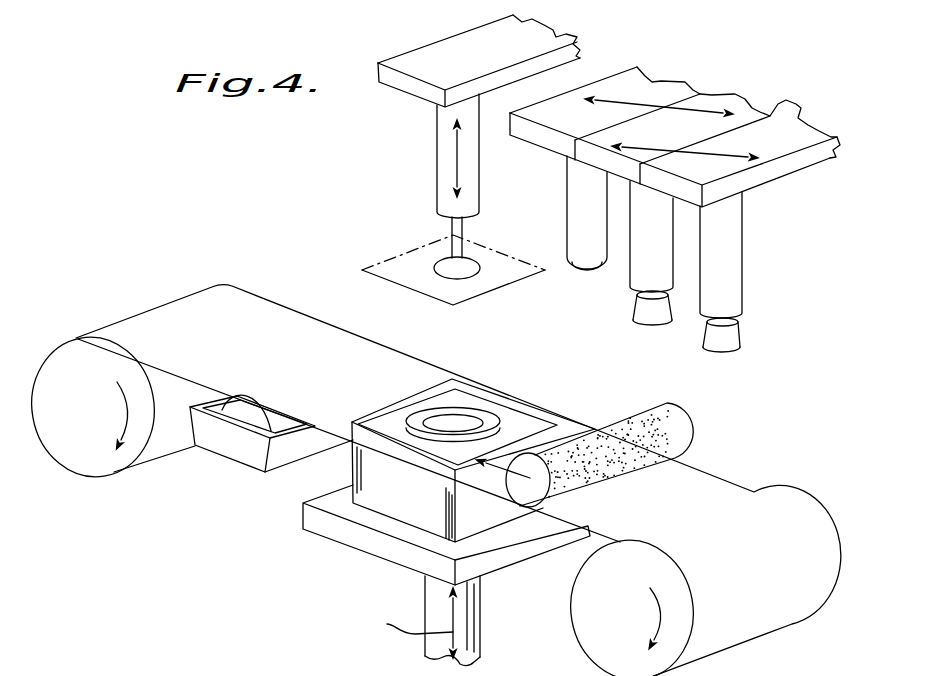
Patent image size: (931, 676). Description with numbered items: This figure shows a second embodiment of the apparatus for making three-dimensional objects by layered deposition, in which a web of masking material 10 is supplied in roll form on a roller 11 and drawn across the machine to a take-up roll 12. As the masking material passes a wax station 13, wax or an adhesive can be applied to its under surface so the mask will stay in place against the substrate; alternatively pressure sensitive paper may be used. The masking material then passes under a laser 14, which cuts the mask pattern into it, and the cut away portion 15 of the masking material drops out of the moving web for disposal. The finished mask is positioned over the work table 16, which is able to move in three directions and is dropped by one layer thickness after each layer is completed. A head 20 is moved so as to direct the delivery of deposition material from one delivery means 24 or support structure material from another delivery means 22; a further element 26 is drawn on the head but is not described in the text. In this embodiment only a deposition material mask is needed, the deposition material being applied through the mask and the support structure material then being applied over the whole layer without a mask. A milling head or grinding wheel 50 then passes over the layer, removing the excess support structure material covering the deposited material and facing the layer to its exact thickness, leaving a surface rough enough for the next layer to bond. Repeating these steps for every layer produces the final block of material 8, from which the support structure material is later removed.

The block of material 8 is at (407, 496).
The masking material 10 is at (288, 330).
The roller 11 is at (63, 447).
The take-up roll 12 is at (597, 603).
The wax station 13 is at (237, 450).
The laser 14 is at (575, 210).
The cut away portion 15 is at (402, 265).
The work table 16 is at (373, 540).
The head 20 is at (487, 47).
The delivery means 22 is at (647, 255).
The delivery means 24 is at (730, 268).
The vacuum pickup 26 is at (440, 143).
The milling or grinding tool 50 is at (677, 440).